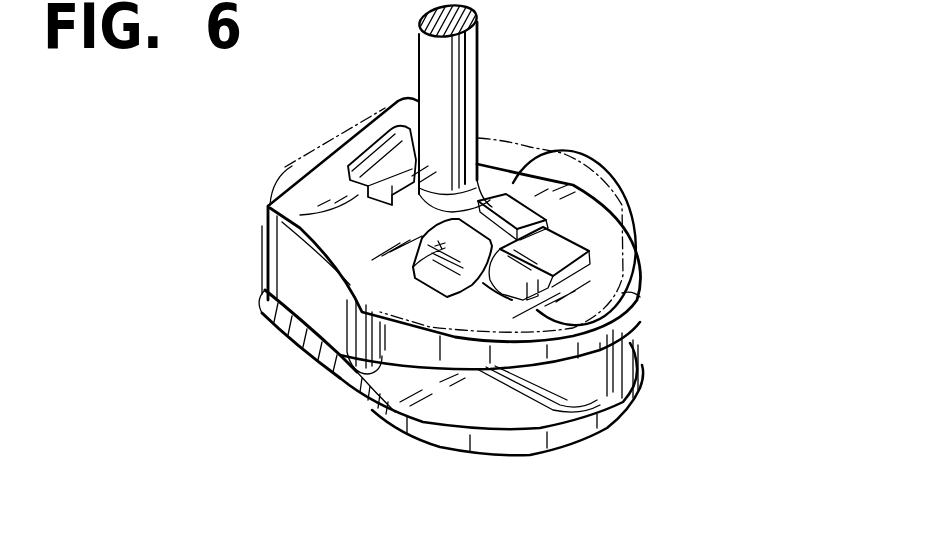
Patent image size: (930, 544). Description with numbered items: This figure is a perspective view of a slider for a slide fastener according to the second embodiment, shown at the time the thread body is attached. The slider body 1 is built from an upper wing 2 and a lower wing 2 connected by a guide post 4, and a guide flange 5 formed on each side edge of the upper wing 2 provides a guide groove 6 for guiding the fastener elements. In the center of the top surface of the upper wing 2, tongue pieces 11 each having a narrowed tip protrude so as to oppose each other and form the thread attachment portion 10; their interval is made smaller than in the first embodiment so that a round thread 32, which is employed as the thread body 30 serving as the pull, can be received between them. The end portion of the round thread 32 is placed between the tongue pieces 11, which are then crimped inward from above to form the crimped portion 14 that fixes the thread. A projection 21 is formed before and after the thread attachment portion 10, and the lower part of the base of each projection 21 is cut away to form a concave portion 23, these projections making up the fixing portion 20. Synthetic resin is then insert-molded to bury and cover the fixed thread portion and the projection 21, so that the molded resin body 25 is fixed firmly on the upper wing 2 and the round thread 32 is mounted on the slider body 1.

The slider body 1 is at (633, 215).
The upper wing / lower wing 2 is at (365, 383).
The guide post 4 is at (579, 377).
The guide flange 5 is at (330, 372).
The guide groove 6 is at (466, 430).
The thread attachment portion 10 is at (432, 243).
The tongue pieces 11 is at (342, 283).
The crimped portion 14 is at (513, 211).
The fixing portion 20 is at (453, 232).
The projection 21 is at (377, 163).
The concave portion 23 is at (268, 210).
The molded resin body 25 is at (505, 139).
The thread body 30 is at (474, 106).
The round thread 32 is at (437, 100).